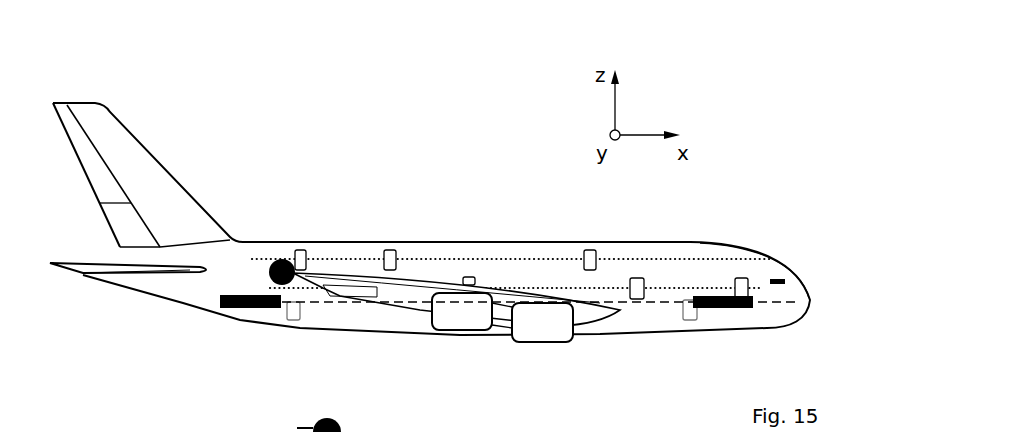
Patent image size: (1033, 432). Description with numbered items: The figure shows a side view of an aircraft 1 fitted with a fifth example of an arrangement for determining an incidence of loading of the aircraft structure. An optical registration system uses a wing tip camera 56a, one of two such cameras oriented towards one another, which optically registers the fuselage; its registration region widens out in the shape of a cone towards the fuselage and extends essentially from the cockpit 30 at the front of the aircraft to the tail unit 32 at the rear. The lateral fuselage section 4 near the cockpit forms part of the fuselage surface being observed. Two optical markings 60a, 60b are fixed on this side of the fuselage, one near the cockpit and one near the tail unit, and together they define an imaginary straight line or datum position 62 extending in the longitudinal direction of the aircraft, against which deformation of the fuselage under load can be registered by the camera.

The aircraft 1 is at (722, 205).
The lateral fuselage section 4 is at (488, 241).
The cockpit 30 is at (797, 317).
The tail unit 32 is at (135, 278).
The wing tip camera 56a is at (287, 261).
The optical marking 60a is at (732, 308).
The optical marking 60b is at (237, 308).
The datum position 62 is at (653, 303).